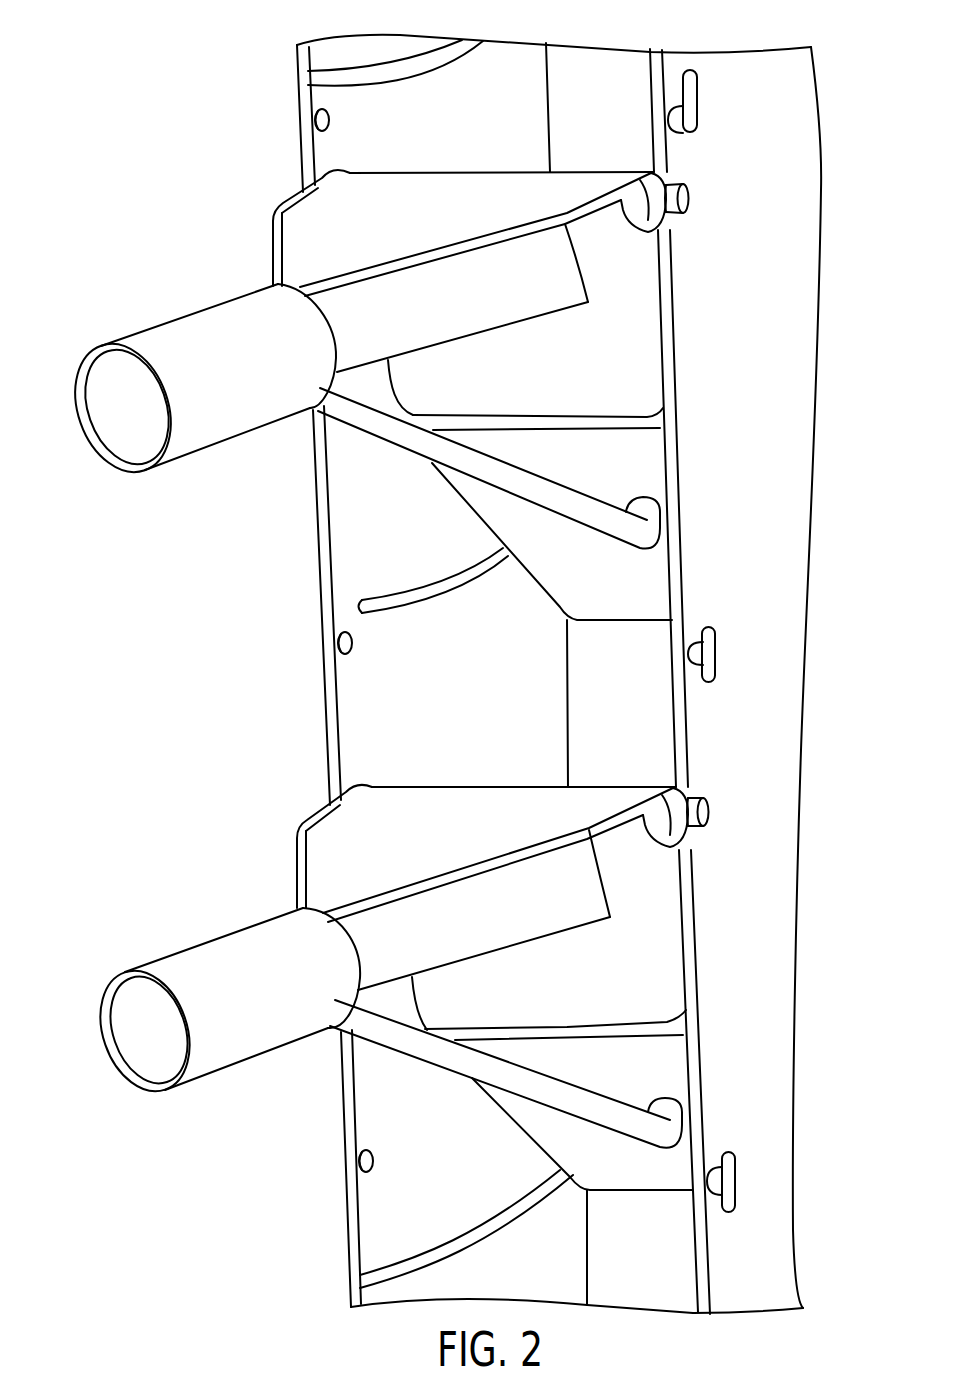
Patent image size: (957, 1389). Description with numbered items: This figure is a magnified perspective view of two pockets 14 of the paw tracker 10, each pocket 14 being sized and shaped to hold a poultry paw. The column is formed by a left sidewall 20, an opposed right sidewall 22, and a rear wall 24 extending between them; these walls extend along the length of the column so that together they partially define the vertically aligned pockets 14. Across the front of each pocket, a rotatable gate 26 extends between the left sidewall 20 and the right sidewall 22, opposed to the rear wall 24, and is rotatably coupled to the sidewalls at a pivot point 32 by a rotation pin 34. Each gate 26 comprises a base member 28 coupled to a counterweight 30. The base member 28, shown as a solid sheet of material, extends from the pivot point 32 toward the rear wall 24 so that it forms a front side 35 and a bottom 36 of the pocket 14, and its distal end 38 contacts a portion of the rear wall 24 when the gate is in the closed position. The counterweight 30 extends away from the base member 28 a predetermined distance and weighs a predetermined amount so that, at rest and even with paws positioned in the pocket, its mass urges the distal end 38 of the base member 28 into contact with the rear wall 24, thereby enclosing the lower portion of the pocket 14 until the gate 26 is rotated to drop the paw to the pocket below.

The paw tracker 10 is at (114, 75).
The pocket 14 is at (616, 150).
The left sidewall 20 is at (302, 107).
The right sidewall 22 is at (805, 163).
The rear wall 24 is at (665, 735).
The rotatable gate 26 is at (651, 348).
The base member 28 is at (653, 463).
The counterweight 30 is at (209, 432).
The pivot point 32 is at (688, 200).
The rotation pin 34 is at (708, 812).
The front side 35 is at (673, 935).
The bottom 36 is at (677, 1062).
The distal end 38 is at (672, 1192).